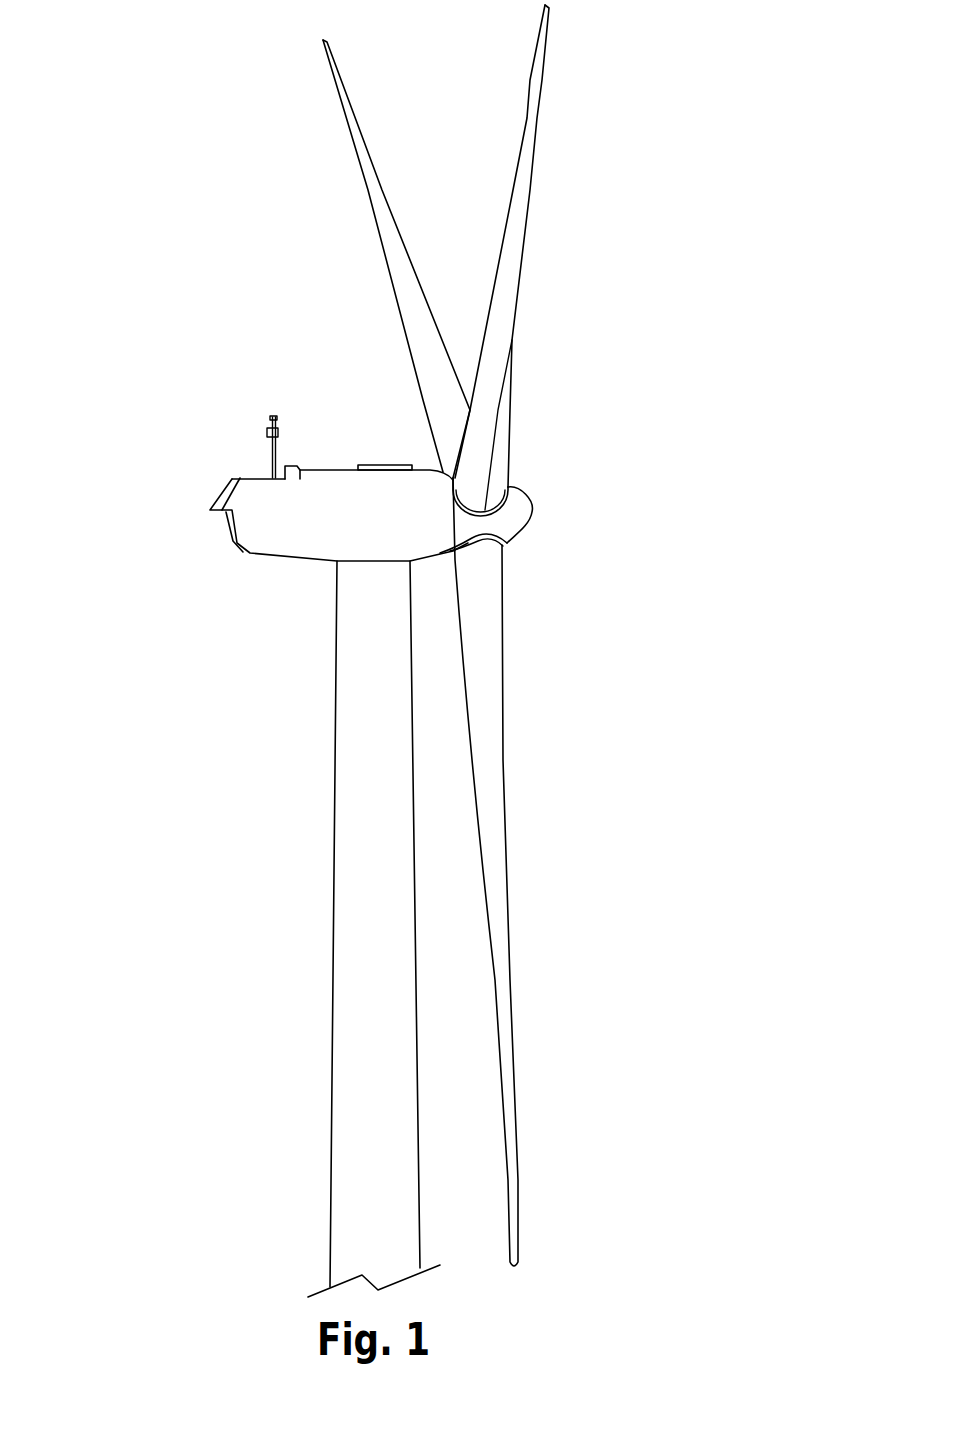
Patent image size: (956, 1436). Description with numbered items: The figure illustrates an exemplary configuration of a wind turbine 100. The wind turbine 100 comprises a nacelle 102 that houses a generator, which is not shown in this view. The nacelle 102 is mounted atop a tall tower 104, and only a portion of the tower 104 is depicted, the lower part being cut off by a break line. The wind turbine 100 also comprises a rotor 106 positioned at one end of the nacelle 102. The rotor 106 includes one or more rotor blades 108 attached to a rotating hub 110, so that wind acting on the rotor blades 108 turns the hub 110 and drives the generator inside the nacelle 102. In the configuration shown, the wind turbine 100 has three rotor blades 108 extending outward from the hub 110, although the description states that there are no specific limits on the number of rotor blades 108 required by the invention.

The wind turbine 100 is at (185, 224).
The nacelle 102 is at (287, 557).
The tower 104 is at (337, 793).
The rotor 106 is at (606, 258).
The rotor blade 108 is at (353, 107).
The rotating hub 110 is at (530, 527).